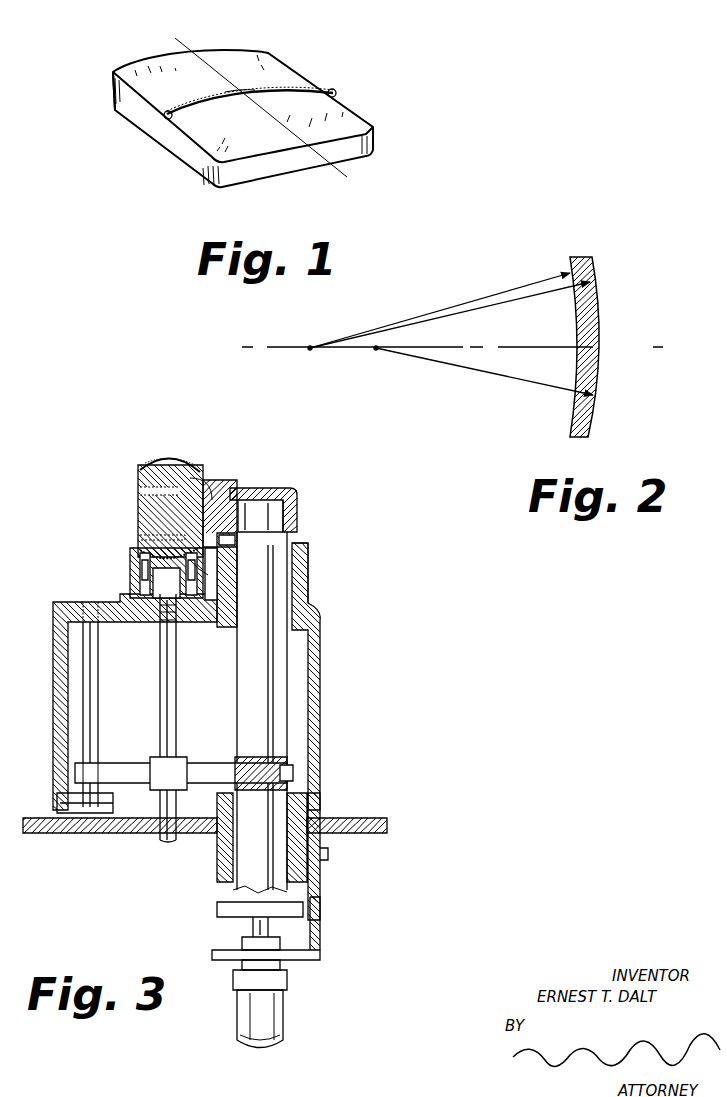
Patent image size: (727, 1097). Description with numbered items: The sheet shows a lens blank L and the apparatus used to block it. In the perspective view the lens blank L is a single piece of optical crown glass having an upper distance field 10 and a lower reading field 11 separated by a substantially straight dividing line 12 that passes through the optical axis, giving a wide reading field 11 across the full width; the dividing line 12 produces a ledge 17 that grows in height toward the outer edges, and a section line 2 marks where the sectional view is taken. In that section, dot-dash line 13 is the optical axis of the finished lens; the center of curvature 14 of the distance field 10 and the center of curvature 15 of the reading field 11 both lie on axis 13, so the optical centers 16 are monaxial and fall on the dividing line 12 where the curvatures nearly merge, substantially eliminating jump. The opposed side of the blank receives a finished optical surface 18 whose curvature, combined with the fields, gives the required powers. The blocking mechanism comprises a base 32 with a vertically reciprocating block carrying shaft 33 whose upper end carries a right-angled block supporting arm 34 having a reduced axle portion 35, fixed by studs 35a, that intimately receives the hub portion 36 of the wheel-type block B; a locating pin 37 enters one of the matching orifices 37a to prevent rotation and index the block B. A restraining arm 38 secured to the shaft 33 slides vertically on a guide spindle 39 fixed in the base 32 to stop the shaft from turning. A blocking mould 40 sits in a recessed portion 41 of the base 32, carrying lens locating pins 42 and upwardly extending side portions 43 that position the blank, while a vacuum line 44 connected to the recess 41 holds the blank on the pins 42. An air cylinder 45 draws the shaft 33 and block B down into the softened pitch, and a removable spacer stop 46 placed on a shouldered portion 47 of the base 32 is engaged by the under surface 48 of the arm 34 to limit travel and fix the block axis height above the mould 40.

In FIG. 1, the section line 2— 2 is at (180, 32).
In FIG. 1, the upper or distance field 10 is at (283, 72).
In FIG. 2, the upper or distance field 10 is at (600, 305).
In FIG. 1, the lower or reading field 11 is at (347, 112).
In FIG. 2, the lower or reading field 11 is at (602, 385).
In FIG. 1, the dividing line 12 is at (297, 87).
In FIG. 2, the optical axis 13 is at (533, 347).
In FIG. 2, the center of curvature of the distance field 14 is at (323, 351).
In FIG. 2, the center of curvature of the reading field 15 is at (377, 351).
In FIG. 1, the optical centers 16 is at (237, 92).
In FIG. 2, the optical centers 16 is at (607, 347).
In FIG. 1, the ledge 17 is at (335, 97).
In FIG. 2, the finished optical surface 18 is at (583, 370).
In FIG. 3, the base 32 is at (205, 622).
In FIG. 3, the block carrying shaft 33 is at (247, 672).
In FIG. 3, the block supporting arm 34 is at (240, 488).
In FIG. 3, the axle portion 35 is at (150, 515).
In FIG. 3, the studs 35a is at (215, 483).
In FIG. 3, the hub portion 36 is at (145, 490).
In FIG. 3, the locating pin 37 is at (200, 570).
In FIG. 3, the matching orifices 37a is at (175, 462).
In FIG. 3, the restraining arm 38 is at (205, 763).
In FIG. 3, the guide spindle 39 is at (95, 727).
In FIG. 3, the blocking mould 40 is at (128, 578).
In FIG. 3, the recessed portion 41 is at (140, 622).
In FIG. 3, the lens locating pins 42 is at (135, 565).
In FIG. 3, the upwardly extending side portions 43 is at (135, 553).
In FIG. 3, the vacuum line 44 is at (176, 712).
In FIG. 3, the air cylinder 45 is at (247, 1010).
In FIG. 3, the spacer stop 46 is at (222, 555).
In FIG. 3, the shouldered portion 47 is at (312, 545).
In FIG. 3, the under surface 48 is at (237, 540).
In FIG. 3, the lens blank L is at (162, 466).
In FIG. 3, the wheel-type block B is at (185, 480).